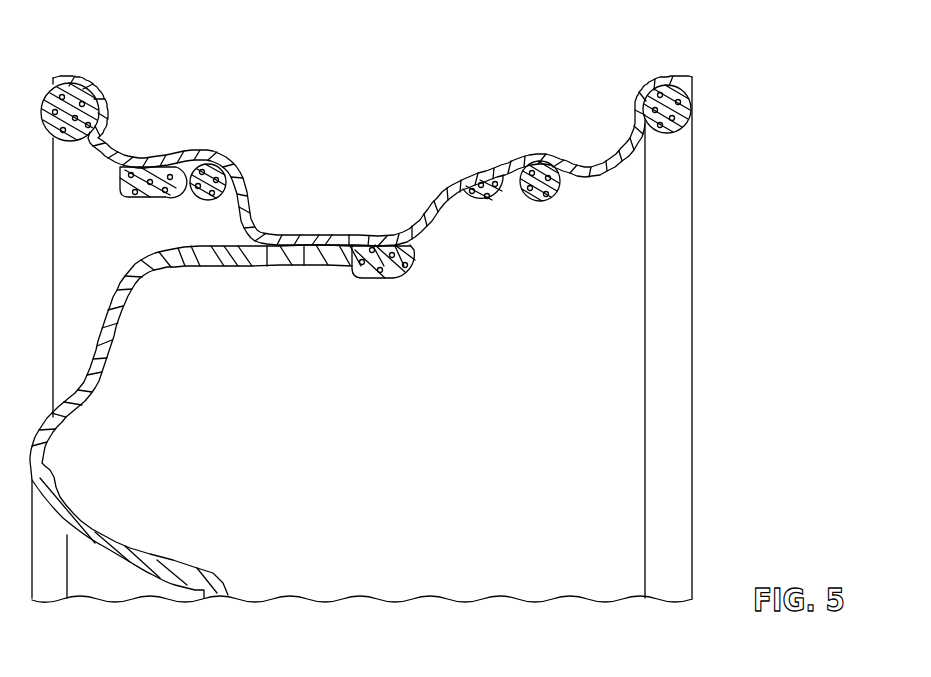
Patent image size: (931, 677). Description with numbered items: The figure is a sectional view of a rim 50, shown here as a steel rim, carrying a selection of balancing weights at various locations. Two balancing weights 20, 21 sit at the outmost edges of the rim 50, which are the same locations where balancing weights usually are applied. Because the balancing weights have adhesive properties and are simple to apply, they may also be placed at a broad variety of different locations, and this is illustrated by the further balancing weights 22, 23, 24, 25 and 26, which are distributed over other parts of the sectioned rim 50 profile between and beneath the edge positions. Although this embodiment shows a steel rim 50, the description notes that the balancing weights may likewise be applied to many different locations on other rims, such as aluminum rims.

The balancing weight 20 is at (77, 100).
The balancing weight 21 is at (673, 100).
The balancing weight 22 is at (148, 175).
The balancing weight 23 is at (215, 177).
The balancing weight 24 is at (377, 268).
The balancing weight 25 is at (486, 200).
The balancing weight 26 is at (540, 197).
The rim 50 is at (315, 240).